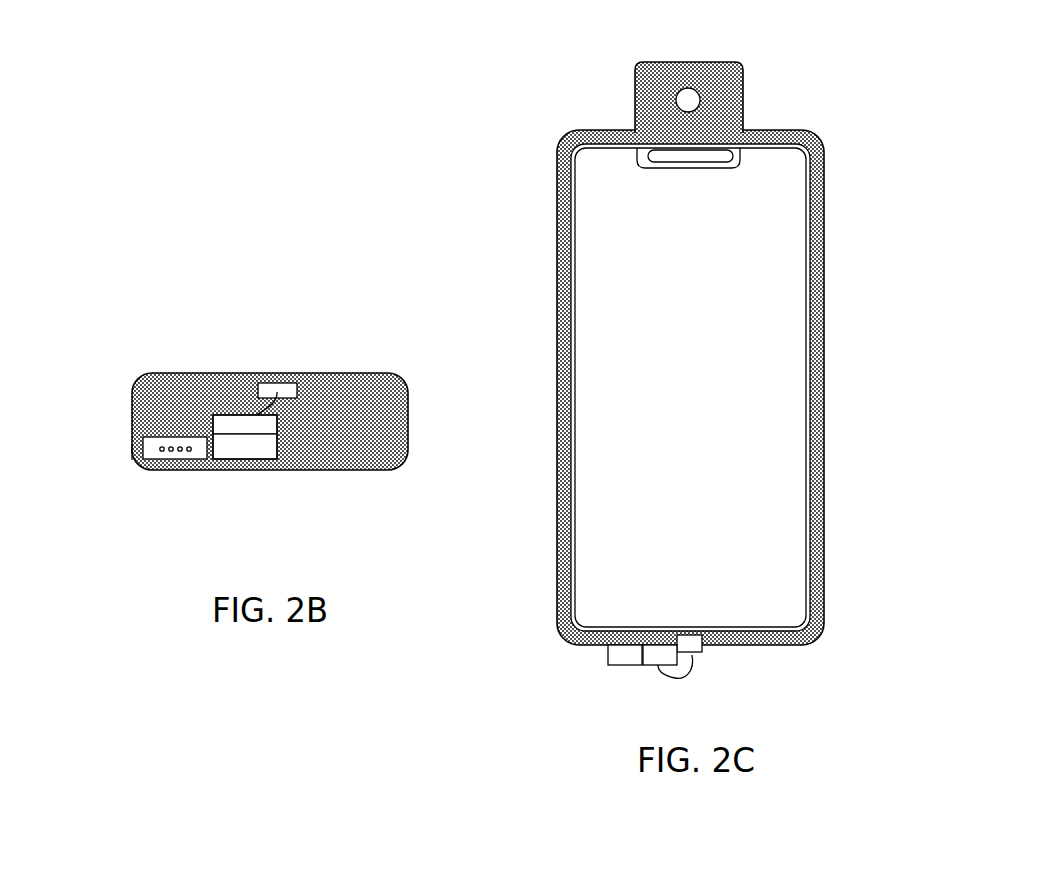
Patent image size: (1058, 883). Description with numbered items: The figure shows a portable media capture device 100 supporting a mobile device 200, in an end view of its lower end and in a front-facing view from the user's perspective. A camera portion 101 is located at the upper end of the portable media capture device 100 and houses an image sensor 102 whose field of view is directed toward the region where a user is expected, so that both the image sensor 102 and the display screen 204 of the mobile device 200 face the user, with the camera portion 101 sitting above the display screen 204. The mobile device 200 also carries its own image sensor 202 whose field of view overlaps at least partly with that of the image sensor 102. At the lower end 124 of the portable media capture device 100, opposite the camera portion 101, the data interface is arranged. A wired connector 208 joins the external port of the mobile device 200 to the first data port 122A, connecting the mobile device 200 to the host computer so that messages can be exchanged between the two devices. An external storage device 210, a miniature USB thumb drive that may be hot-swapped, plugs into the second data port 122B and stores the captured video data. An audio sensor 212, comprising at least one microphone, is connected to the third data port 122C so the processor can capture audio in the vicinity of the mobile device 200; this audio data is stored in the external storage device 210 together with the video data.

In FIG. 2B, the portable media capture device 100 is at (180, 372).
In FIG. 2C, the portable media capture device 100 is at (822, 205).
In FIG. 2C, the camera portion 101 is at (743, 108).
In FIG. 2C, the image sensor 102 is at (688, 88).
In FIG. 2B, the first data port 122A is at (292, 425).
In FIG. 2B, the second data port 122B is at (292, 458).
In FIG. 2B, the third data port 122C is at (126, 452).
In FIG. 2B, the lower end 124 is at (332, 491).
In FIG. 2C, the mobile device 200 is at (818, 250).
In FIG. 2C, the image sensor 202 is at (810, 152).
In FIG. 2C, the display screen 204 is at (765, 367).
In FIG. 2B, the wired connector 208 is at (297, 390).
In FIG. 2C, the wired connector 208 is at (702, 652).
In FIG. 2B, the external storage device 210 is at (245, 460).
In FIG. 2C, the external storage device 210 is at (638, 682).
In FIG. 2B, the audio sensor 212 is at (167, 470).
In FIG. 2C, the audio sensor 212 is at (606, 650).